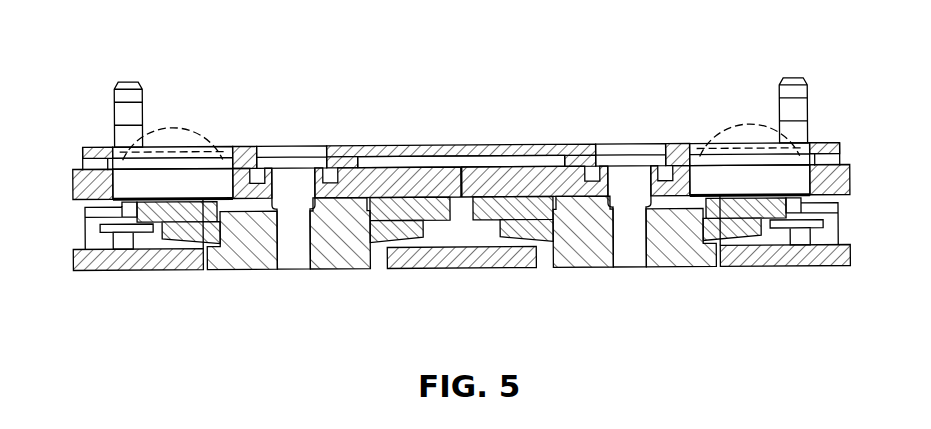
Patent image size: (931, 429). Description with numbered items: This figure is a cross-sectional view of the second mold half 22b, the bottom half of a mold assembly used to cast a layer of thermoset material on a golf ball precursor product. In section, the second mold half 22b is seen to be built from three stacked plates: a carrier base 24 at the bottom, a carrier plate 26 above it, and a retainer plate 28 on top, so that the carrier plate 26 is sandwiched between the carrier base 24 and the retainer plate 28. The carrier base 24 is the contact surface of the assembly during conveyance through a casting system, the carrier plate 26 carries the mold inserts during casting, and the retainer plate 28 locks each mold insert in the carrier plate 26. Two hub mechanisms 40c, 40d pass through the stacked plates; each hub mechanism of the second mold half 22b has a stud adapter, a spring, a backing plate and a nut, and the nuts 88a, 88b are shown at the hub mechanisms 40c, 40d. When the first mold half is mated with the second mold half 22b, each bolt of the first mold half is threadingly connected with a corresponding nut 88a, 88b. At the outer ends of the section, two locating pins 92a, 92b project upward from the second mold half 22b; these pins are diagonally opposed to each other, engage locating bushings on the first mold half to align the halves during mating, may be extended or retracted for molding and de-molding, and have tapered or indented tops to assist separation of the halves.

The second mold half 22b is at (303, 98).
The carrier base 24 is at (110, 270).
The carrier plate 26 is at (73, 183).
The retainer plate 28 is at (82, 155).
The hub mechanism 40c is at (247, 268).
The hub mechanism 40d is at (580, 268).
The nut 88a is at (292, 265).
The nut 88b is at (628, 265).
The locating pin 92a is at (113, 96).
The locating pin 92b is at (780, 108).